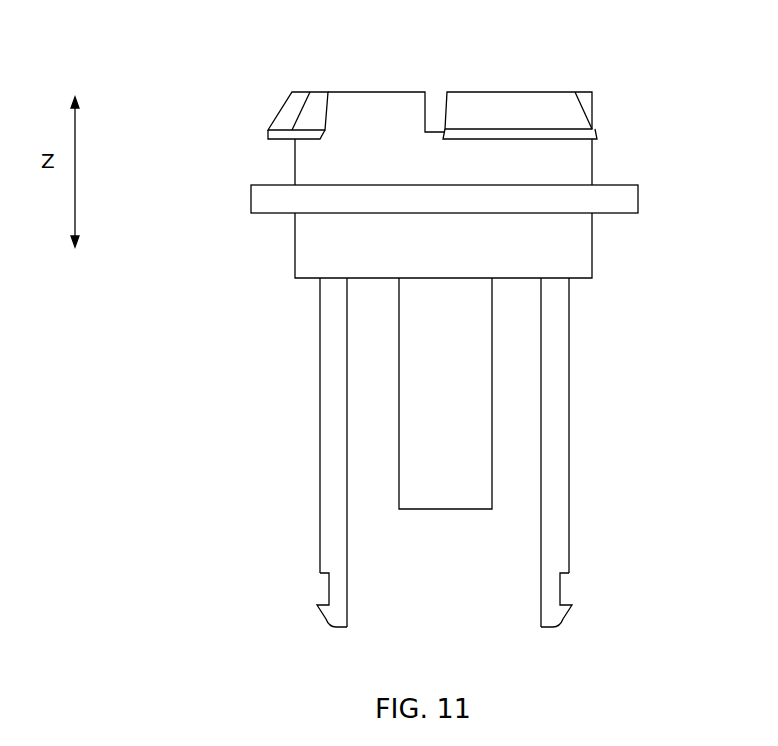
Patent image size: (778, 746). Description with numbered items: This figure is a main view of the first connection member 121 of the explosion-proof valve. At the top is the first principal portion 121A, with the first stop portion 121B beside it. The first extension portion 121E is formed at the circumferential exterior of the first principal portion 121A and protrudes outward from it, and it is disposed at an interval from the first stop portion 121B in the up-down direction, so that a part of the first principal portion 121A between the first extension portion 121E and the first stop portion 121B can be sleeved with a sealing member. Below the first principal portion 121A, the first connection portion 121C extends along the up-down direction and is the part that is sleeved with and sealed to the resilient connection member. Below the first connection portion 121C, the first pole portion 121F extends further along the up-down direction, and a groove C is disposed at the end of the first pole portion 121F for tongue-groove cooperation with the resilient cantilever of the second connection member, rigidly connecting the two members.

The first connection member 121 is at (236, 78).
The first principal portion 121A is at (375, 135).
The first stop portion 121B is at (578, 122).
The first connection portion 121C is at (567, 256).
The first extension portion 121E is at (623, 198).
The first pole portion 121F is at (335, 392).
The groove C is at (320, 589).